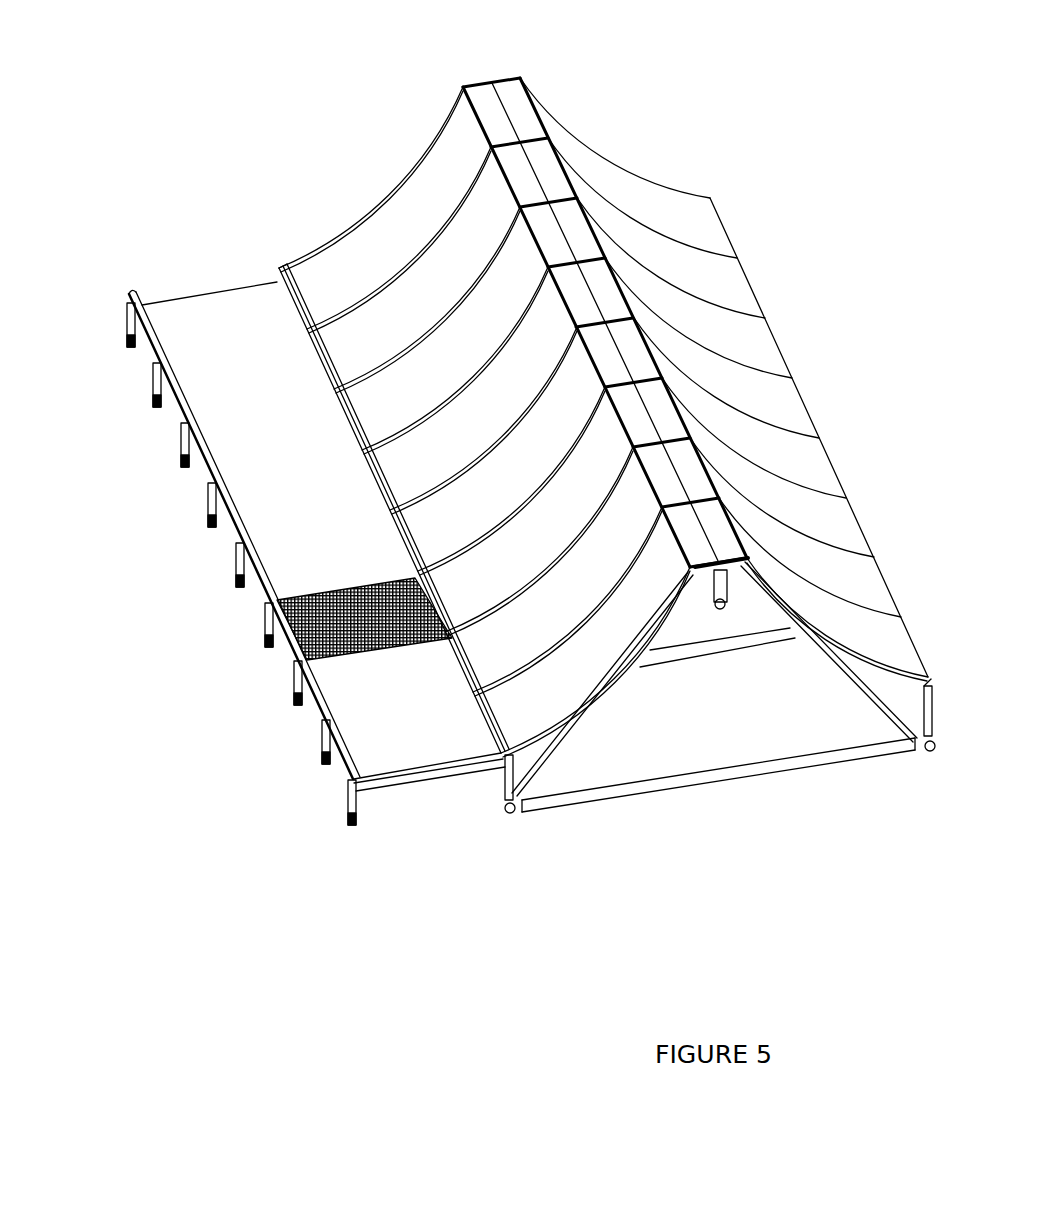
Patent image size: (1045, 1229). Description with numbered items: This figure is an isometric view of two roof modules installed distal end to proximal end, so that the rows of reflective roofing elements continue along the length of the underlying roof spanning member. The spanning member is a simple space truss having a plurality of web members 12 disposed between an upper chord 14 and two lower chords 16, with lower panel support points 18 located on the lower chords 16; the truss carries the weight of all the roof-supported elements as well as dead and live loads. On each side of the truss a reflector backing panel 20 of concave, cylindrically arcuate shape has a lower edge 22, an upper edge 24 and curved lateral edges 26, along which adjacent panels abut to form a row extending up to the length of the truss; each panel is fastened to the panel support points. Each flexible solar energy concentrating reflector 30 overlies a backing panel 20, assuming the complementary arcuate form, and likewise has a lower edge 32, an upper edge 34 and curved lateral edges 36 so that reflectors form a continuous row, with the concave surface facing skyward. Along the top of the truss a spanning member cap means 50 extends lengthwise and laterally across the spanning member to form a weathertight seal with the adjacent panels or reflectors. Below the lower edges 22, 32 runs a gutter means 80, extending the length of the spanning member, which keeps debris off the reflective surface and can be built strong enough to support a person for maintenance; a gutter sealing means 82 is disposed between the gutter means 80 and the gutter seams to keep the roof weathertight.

The web members 12 is at (714, 687).
The upper chord 14 is at (730, 630).
The lower chords 16 is at (720, 764).
The lower panel support points 18 is at (537, 817).
The reflector backing panel 20 is at (708, 280).
The lower edge 22 is at (783, 347).
The upper edge 24 is at (757, 378).
The curved lateral edges 26 is at (790, 484).
The solar energy concentrating reflector 30 is at (352, 262).
The lower edge 32 is at (334, 395).
The upper edge 34 is at (284, 290).
The curved lateral edges 36 is at (460, 460).
The spanning member cap means 50 is at (605, 287).
The gutter means 80 is at (348, 522).
The gutter sealing means 82 is at (537, 836).